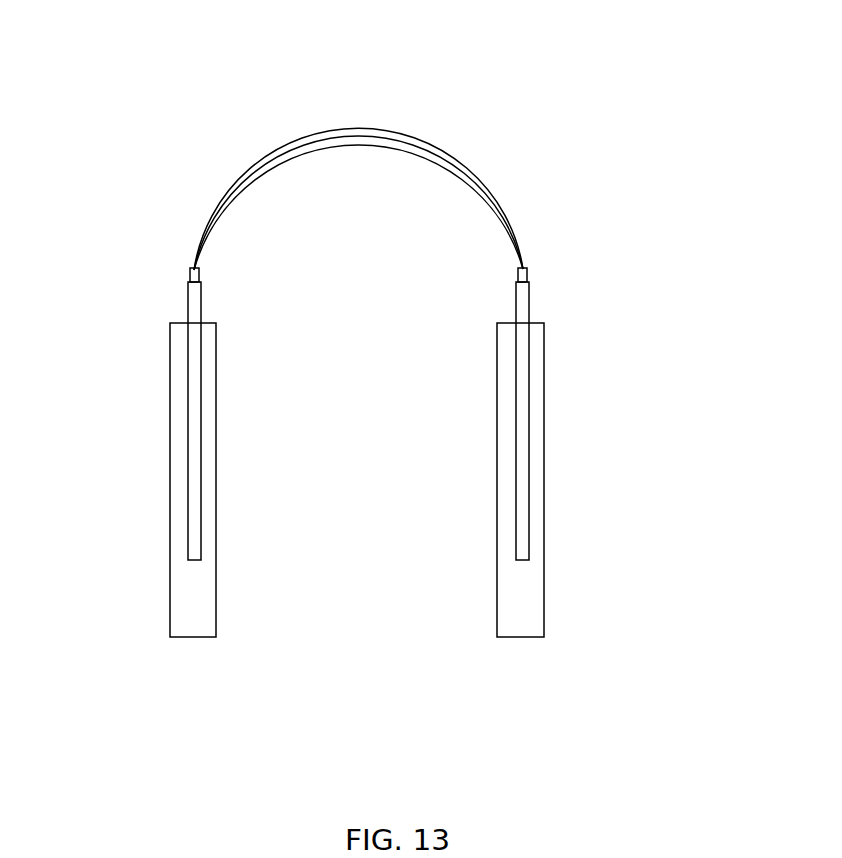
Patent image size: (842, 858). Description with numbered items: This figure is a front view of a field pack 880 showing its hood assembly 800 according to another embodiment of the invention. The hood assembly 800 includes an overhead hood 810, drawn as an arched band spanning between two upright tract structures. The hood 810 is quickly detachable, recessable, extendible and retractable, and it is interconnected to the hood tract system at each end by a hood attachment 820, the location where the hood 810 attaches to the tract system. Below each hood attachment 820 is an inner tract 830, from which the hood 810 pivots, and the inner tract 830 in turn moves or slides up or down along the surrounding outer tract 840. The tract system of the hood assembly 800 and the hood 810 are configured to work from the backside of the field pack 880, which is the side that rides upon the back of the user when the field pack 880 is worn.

The hood assembly 800 is at (589, 104).
The hood 810 is at (373, 128).
The hood attachment 820 is at (180, 277).
The inner tract 830 is at (173, 307).
The outer tract 840 is at (175, 443).
The field pack 880 is at (428, 694).